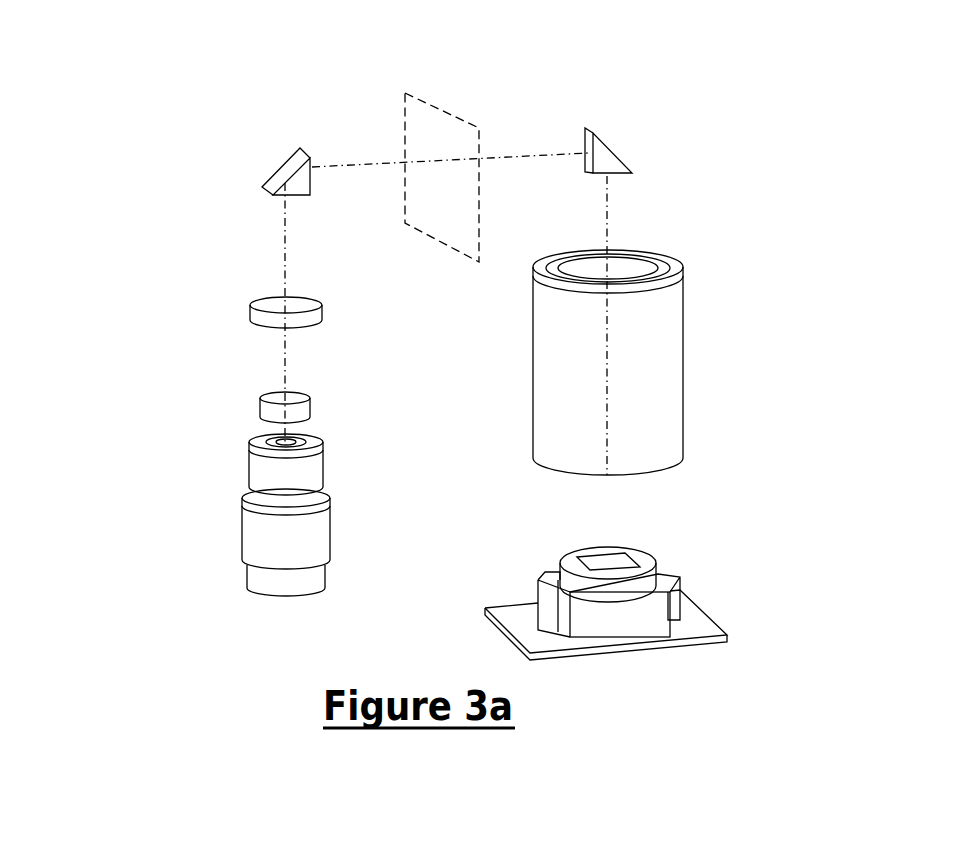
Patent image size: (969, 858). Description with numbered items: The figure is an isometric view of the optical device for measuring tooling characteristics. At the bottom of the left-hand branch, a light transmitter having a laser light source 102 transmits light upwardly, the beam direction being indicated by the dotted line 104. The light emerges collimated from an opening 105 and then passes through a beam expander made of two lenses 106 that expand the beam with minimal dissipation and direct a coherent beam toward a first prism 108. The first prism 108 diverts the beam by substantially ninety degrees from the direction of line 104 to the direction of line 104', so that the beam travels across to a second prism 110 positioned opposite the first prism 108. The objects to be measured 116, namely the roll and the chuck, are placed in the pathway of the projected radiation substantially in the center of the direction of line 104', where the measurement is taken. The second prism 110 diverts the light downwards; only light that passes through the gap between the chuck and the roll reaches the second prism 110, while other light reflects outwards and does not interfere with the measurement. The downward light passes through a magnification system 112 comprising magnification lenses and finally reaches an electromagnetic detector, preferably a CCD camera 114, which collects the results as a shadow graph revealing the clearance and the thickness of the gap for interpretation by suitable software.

The laser light source 102 is at (238, 540).
The dotted line 104 is at (196, 312).
The beam direction 104' is at (450, 86).
The opening 105 is at (254, 447).
The lenses 106 is at (248, 320).
The first prism 108 is at (276, 167).
The second prism 110 is at (613, 147).
The magnification system 112 is at (686, 372).
The CCD camera 114 is at (720, 613).
The objects to be measured 116 is at (404, 148).